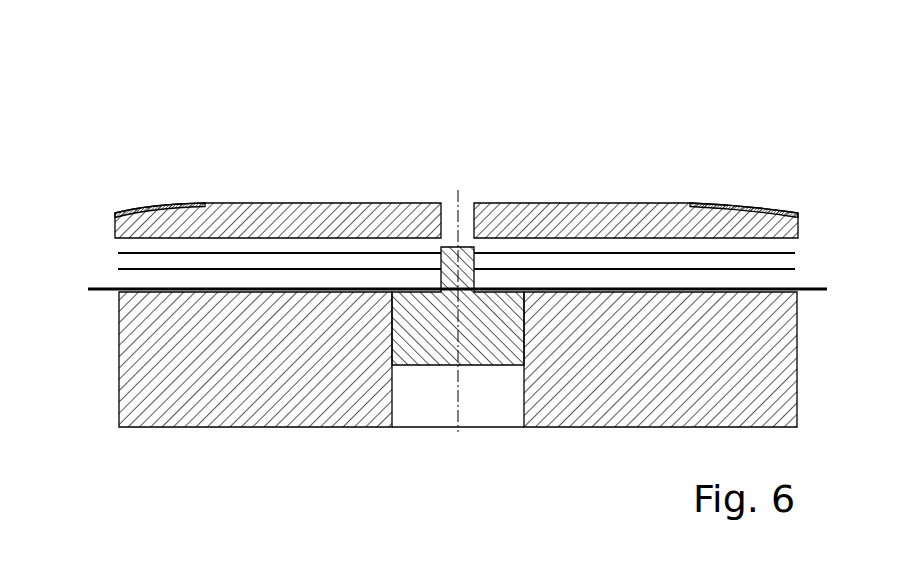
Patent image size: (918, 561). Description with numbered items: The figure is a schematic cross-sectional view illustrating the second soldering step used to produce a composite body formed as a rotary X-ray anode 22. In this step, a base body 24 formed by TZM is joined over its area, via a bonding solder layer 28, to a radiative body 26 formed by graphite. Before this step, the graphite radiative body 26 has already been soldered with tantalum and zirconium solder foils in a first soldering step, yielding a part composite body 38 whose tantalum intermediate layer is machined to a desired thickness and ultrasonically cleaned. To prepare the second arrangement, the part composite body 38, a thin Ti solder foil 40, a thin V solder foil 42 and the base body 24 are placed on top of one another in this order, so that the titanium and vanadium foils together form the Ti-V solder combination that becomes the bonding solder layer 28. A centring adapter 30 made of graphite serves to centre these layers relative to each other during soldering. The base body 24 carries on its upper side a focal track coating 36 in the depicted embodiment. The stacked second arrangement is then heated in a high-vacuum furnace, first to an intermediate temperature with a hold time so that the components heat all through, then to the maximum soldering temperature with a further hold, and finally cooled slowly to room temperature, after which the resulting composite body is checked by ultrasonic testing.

The rotary X-ray anode 22 is at (238, 134).
The base body 24 is at (275, 207).
The radiative body 26 is at (670, 420).
The bonding solder layer 28 is at (825, 243).
The centring adapter 30 is at (433, 355).
The focal track coating 36 is at (760, 211).
The part composite body 38 is at (88, 282).
The Ti solder foil 40 is at (660, 268).
The V solder foil 42 is at (615, 252).